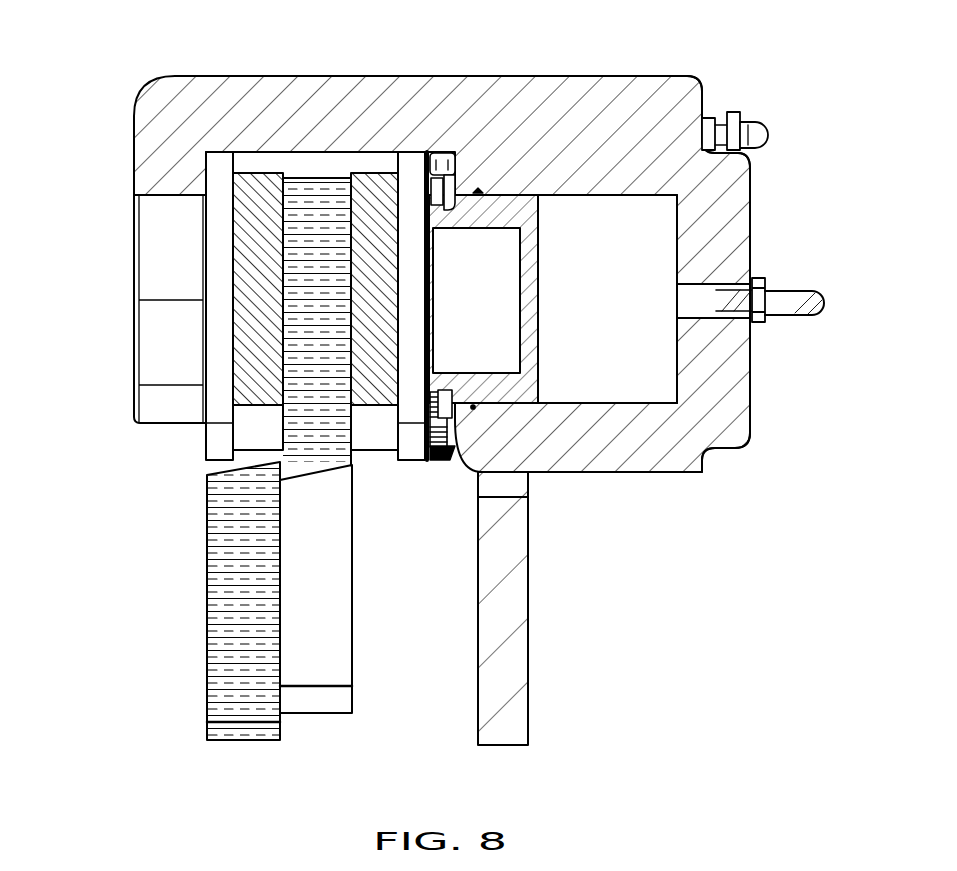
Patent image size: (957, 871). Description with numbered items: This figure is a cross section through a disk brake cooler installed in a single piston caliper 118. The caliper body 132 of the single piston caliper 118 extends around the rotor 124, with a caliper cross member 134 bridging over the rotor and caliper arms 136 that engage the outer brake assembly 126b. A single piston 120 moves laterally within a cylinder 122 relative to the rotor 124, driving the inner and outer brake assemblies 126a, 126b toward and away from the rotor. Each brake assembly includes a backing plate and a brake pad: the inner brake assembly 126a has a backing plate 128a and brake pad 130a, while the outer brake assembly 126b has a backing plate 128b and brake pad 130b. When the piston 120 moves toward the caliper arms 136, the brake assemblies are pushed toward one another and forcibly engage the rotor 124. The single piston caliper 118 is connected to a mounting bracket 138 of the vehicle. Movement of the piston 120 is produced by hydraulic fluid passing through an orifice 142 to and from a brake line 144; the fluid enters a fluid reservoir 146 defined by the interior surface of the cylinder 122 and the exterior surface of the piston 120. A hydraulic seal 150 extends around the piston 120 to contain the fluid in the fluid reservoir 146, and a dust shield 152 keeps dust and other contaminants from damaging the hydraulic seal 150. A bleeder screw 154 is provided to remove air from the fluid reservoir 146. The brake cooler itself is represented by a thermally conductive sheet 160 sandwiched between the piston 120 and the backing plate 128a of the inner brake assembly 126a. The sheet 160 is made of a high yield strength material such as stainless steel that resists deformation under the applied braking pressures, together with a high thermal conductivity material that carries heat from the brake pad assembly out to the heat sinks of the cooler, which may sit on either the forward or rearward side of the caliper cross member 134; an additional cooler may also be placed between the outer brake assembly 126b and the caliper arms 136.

The single piston caliper 118 is at (424, 76).
The single piston 120 is at (530, 317).
The cylinder 122 is at (582, 403).
The rotor 124 is at (205, 623).
The inner brake assembly 126a is at (410, 447).
The outer brake assembly 126b is at (207, 452).
The backing plate of inner brake assembly 128a is at (408, 347).
The backing plate of outer brake assembly 128b is at (220, 357).
The brake pad of inner brake assembly 130a is at (368, 300).
The brake pad of outer brake assembly 130b is at (250, 387).
The caliper body 132 is at (685, 98).
The caliper cross member 134 is at (285, 100).
The caliper arms 136 is at (168, 268).
The mounting bracket 138 is at (510, 625).
The orifice 142 is at (758, 322).
The brake line 144 is at (815, 305).
The fluid reservoir 146 is at (650, 236).
The hydraulic seal 150 is at (480, 190).
The dust shield 152 is at (455, 172).
The bleeder screw 154 is at (757, 122).
The thermally conductive sheet 160 is at (437, 247).